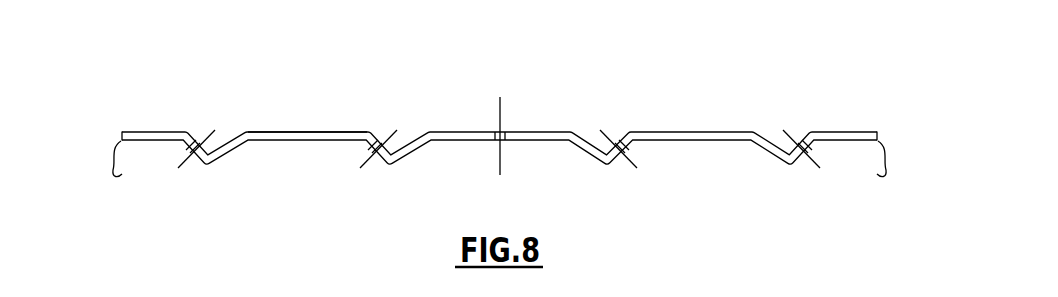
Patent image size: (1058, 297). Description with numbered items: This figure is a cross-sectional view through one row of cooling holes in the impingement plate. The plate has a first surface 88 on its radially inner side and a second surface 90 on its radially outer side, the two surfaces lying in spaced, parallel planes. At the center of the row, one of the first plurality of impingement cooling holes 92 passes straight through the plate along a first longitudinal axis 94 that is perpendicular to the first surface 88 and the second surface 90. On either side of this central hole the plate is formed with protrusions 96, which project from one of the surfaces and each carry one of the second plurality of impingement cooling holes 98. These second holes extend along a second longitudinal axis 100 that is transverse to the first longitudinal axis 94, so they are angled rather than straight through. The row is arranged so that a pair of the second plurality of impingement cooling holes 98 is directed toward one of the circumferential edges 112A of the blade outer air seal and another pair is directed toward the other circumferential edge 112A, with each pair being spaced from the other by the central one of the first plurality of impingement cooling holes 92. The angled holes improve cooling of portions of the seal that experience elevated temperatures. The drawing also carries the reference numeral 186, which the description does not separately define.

The first surface 88 is at (263, 141).
The second surface 90 is at (303, 132).
The first plurality of impingement cooling holes 92 is at (505, 131).
The first longitudinal axis 94 is at (500, 108).
The protrusions 96 is at (212, 164).
The second plurality of impingement cooling holes 98 is at (196, 151).
The second longitudinal axis 100 is at (215, 130).
The circumferential edges 112A is at (498, 167).
The formed strip assembly 186 is at (798, 76).